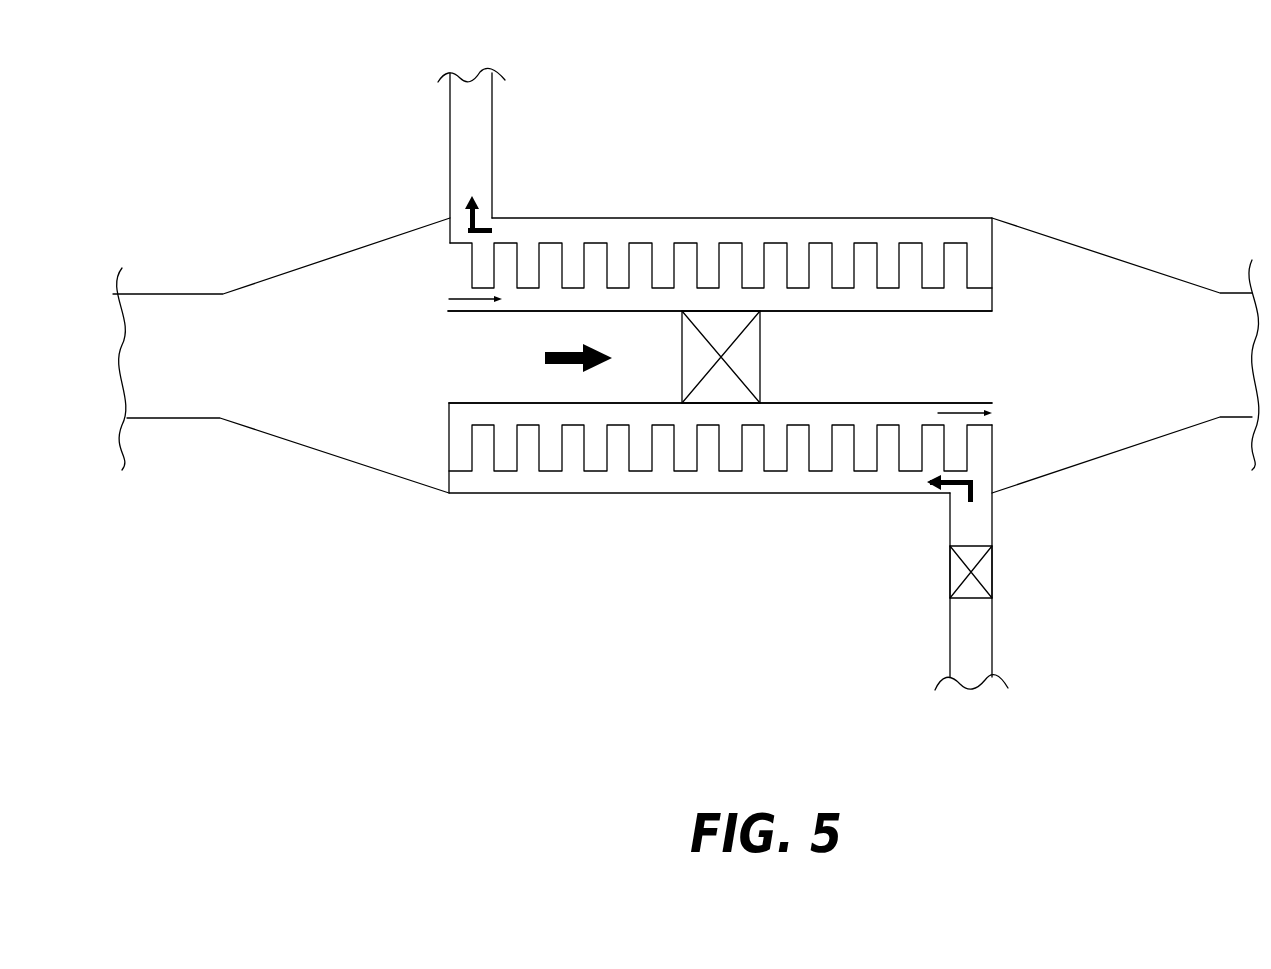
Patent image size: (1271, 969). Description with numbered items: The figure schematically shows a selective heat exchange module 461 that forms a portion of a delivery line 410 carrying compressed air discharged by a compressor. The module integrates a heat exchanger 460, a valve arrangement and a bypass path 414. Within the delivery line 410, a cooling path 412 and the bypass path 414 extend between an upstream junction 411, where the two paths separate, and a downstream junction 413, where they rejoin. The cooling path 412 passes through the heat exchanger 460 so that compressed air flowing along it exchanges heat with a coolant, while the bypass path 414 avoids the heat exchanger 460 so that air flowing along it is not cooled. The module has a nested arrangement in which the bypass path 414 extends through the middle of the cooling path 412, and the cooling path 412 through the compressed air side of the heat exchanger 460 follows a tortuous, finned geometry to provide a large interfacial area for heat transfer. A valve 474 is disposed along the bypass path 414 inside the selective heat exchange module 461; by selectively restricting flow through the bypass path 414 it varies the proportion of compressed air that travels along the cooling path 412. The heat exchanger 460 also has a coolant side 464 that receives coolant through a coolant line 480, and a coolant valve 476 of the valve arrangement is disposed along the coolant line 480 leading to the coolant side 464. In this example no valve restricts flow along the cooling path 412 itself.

The delivery line 410 is at (143, 327).
The upstream junction 411 is at (447, 245).
The cooling path 412 is at (458, 280).
The downstream junction 413 is at (1003, 312).
The bypass path 414 is at (457, 370).
The heat exchanger 460 is at (695, 303).
The selective heat exchange module 461 is at (193, 67).
The coolant side 464 is at (655, 232).
The valve 474 is at (762, 352).
The coolant valve 476 is at (993, 565).
The coolant line 480 is at (779, 379).